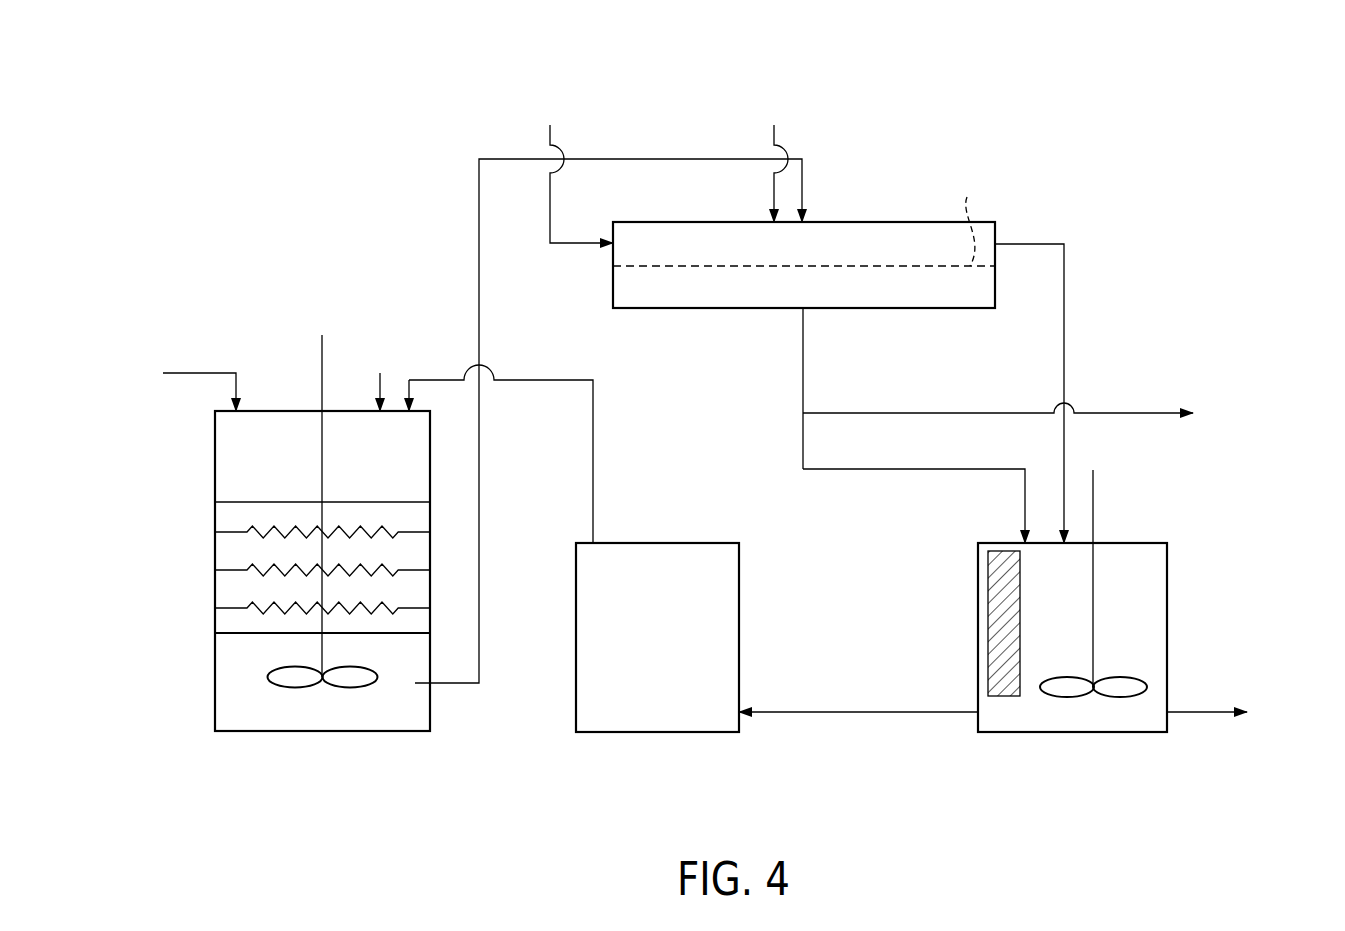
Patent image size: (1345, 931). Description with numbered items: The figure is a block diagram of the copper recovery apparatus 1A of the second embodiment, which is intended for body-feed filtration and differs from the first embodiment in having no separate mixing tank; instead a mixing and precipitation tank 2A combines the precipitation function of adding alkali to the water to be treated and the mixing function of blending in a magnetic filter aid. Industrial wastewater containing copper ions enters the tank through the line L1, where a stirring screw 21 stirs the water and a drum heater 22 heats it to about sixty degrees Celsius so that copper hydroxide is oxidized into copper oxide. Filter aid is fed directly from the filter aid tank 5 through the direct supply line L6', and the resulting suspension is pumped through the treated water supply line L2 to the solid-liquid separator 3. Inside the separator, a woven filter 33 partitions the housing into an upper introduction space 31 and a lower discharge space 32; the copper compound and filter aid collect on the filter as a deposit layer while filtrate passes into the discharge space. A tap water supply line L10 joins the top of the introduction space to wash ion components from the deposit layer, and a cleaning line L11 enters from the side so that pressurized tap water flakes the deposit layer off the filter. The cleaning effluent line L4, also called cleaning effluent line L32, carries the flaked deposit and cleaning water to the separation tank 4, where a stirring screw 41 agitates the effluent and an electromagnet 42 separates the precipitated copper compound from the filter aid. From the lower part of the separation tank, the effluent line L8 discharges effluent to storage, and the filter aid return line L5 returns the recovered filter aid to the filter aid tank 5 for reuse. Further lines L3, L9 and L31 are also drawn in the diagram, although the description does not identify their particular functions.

The copper recovery apparatus 1A is at (925, 103).
The mixing and precipitation tank 2A is at (320, 735).
The stirring screw 21 is at (270, 675).
The drum heater 22 is at (285, 517).
The solid-liquid separator 3 is at (858, 222).
The introduction space 31 is at (913, 236).
The discharge space 32 is at (968, 292).
The filter 33 is at (968, 214).
The separation tank 4 is at (1088, 735).
The stirring screw 41 is at (1125, 678).
The electromagnet 42 is at (1003, 697).
The filter aid tank 5 is at (655, 735).
The line L1 is at (236, 389).
The treated water supply line L2 is at (479, 466).
The filtrated water line L3 is at (803, 349).
The cleaning effluent line L4 is at (1064, 283).
The filter aid return line L5 is at (860, 711).
The direct supply line L6' is at (538, 454).
The effluent line L8 is at (1205, 711).
The NaOH supply line L9 is at (380, 390).
The tap water supply line L10 is at (774, 190).
The cleaning line L11 is at (550, 192).
The filtrated water discharge line L31 is at (1135, 411).
The cleaning effluent line L32 is at (945, 470).